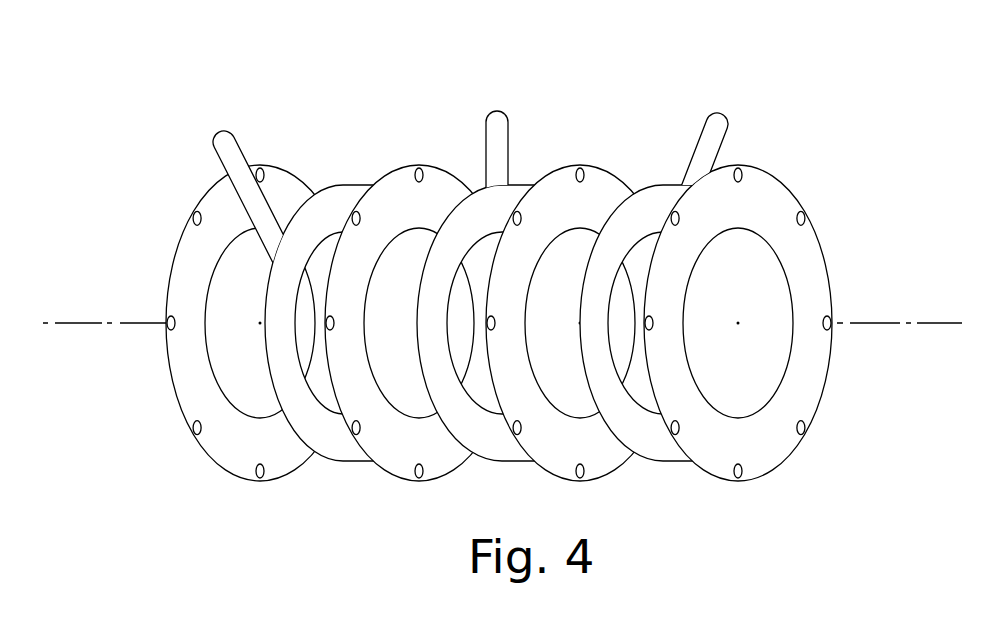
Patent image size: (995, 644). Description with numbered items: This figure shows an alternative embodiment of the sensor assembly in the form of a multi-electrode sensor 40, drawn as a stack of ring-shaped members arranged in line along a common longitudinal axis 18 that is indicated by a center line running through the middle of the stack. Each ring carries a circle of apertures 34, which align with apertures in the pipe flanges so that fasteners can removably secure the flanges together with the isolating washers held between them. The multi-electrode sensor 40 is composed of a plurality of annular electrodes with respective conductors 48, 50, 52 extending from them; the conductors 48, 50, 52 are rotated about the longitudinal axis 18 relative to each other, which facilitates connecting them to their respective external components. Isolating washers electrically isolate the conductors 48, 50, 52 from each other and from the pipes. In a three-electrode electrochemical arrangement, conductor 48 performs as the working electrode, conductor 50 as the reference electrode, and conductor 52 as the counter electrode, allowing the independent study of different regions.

The longitudinal axis 18 is at (870, 324).
The apertures 34 is at (197, 211).
The multi-electrode sensor 40 is at (502, 245).
The conductor 48 is at (224, 133).
The conductor 50 is at (493, 111).
The conductor 52 is at (718, 114).